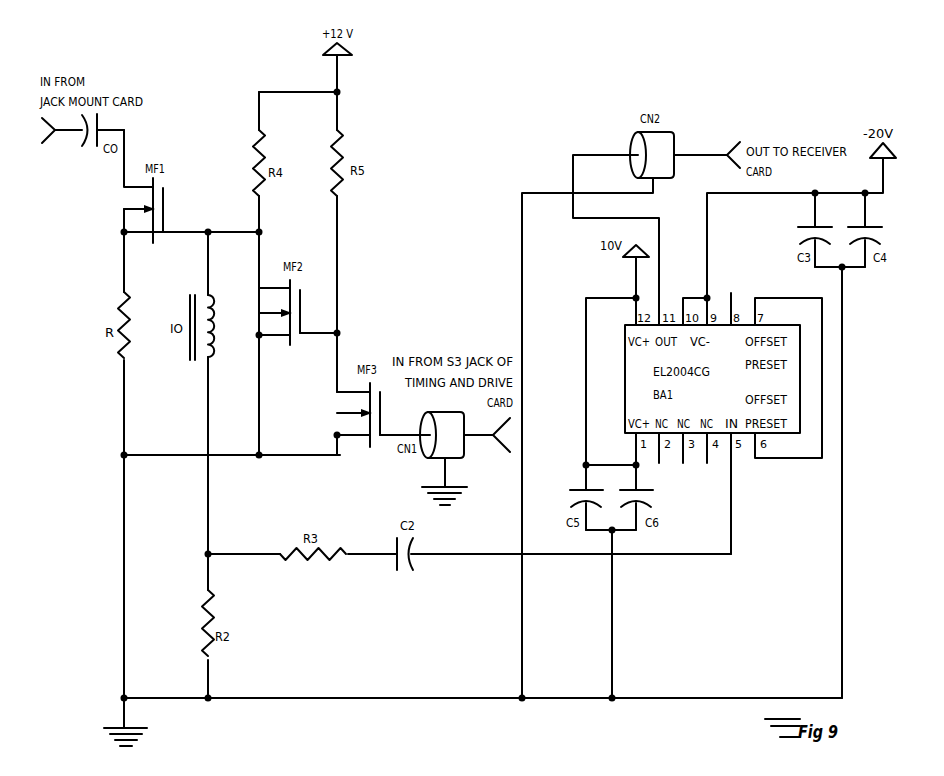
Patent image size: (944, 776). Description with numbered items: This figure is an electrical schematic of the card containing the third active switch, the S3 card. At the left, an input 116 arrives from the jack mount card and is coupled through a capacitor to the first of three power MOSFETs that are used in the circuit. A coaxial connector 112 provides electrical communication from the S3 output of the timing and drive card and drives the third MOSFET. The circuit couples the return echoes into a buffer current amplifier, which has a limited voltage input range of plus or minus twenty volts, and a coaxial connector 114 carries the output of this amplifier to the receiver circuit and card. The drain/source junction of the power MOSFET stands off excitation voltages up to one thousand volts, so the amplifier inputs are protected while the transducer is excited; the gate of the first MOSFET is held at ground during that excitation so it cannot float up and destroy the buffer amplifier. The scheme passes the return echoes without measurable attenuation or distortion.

The coaxial connector 112 is at (452, 448).
The coaxial connector 114 is at (668, 134).
The input 116 is at (43, 133).